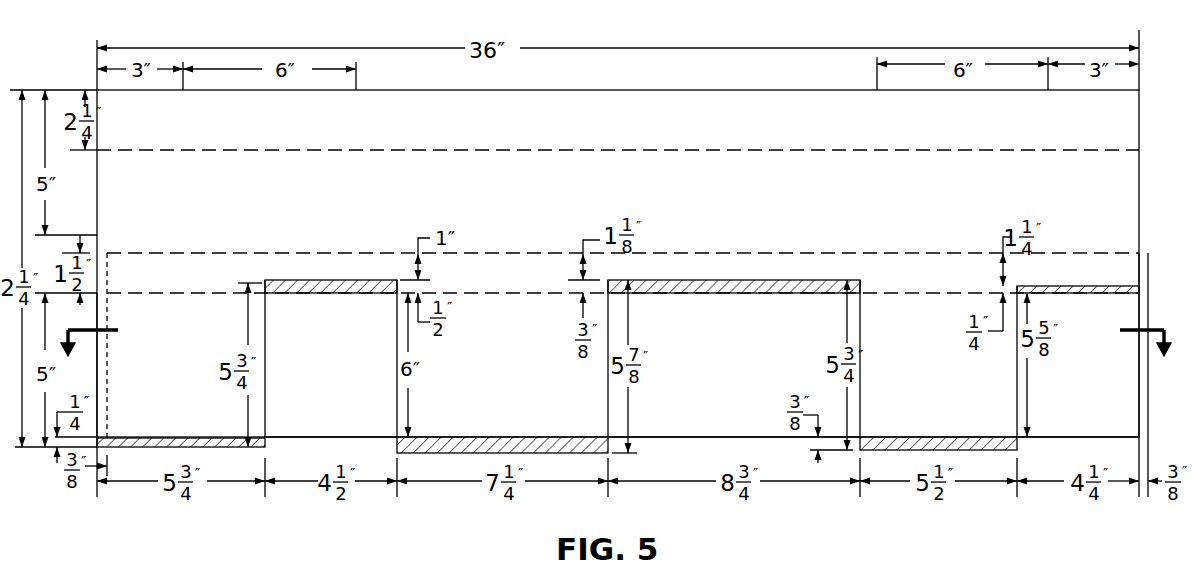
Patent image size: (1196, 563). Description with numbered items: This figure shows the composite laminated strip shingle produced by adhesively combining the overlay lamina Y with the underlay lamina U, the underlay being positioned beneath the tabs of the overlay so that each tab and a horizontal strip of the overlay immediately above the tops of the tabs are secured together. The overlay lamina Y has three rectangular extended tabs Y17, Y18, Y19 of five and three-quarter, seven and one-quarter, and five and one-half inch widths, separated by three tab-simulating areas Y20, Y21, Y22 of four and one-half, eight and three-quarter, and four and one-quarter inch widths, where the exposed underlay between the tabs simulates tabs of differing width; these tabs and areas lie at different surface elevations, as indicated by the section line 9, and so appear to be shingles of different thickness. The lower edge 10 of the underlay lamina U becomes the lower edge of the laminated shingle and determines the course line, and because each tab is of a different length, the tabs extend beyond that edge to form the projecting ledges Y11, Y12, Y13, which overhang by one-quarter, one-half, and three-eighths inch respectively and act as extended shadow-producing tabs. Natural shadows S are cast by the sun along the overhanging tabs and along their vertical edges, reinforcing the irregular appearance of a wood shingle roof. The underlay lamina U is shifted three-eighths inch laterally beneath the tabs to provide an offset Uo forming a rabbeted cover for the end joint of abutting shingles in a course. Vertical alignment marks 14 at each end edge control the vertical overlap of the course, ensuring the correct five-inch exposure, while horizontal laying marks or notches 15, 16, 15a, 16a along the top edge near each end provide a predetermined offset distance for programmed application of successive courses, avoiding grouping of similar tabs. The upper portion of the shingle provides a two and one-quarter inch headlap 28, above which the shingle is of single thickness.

The headlap 28 is at (1127, 127).
The vertical alignment marks 14 is at (97, 235).
The horizontal laying mark 15 is at (183, 90).
The horizontal laying mark 16 is at (356, 90).
The horizontal laying mark 15a is at (1048, 90).
The horizontal laying mark 16a is at (877, 90).
The section line 9 is at (617, 358).
The lower edge of underlay lamina 10 is at (336, 420).
The underlay lamina U is at (1115, 277).
The offset Uo is at (1143, 309).
The natural shadow S is at (1125, 288).
The overlay lamina Y is at (663, 208).
The projecting ledge Y11 is at (207, 438).
The projecting ledge Y12 is at (502, 432).
The projecting ledge Y13 is at (925, 444).
The extended tab Y17 is at (190, 383).
The extended tab Y18 is at (497, 382).
The extended tab Y19 is at (953, 382).
The tab-simulating area Y20 is at (343, 383).
The tab-simulating area Y21 is at (737, 382).
The tab-simulating area Y22 is at (1092, 382).